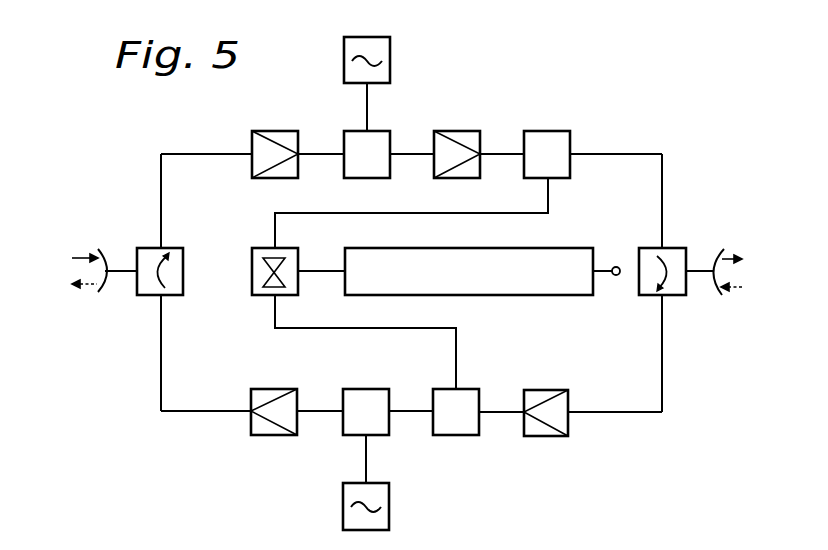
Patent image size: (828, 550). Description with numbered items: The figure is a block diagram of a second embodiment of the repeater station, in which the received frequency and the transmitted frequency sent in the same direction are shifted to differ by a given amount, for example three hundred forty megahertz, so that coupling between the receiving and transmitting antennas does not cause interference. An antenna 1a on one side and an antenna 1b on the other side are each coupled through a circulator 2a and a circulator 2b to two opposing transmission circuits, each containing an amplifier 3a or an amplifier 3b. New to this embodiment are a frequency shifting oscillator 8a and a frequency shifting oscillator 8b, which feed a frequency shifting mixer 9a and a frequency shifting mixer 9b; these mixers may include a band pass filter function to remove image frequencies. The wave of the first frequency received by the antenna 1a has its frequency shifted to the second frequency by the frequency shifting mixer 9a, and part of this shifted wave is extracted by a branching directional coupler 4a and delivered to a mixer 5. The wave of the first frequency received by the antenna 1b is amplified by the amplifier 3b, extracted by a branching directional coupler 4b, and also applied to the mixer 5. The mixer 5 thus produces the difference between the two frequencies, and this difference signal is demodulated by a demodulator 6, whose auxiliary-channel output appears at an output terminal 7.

The antenna 1a is at (108, 222).
The antenna 1b is at (715, 257).
The circulator 2a is at (155, 295).
The circulator 2b is at (676, 295).
The amplifier 3a is at (281, 131).
The amplifier 3b is at (275, 435).
The branching directional coupler 4a is at (558, 131).
The branching directional coupler 4b is at (466, 389).
The mixer 5 is at (263, 248).
The demodulator 6 is at (399, 232).
The output terminal 7 is at (606, 259).
The frequency shifting oscillator 8a is at (358, 37).
The frequency shifting oscillator 8b is at (389, 517).
The frequency shifting mixer 9a is at (380, 131).
The frequency shifting mixer 9b is at (380, 435).